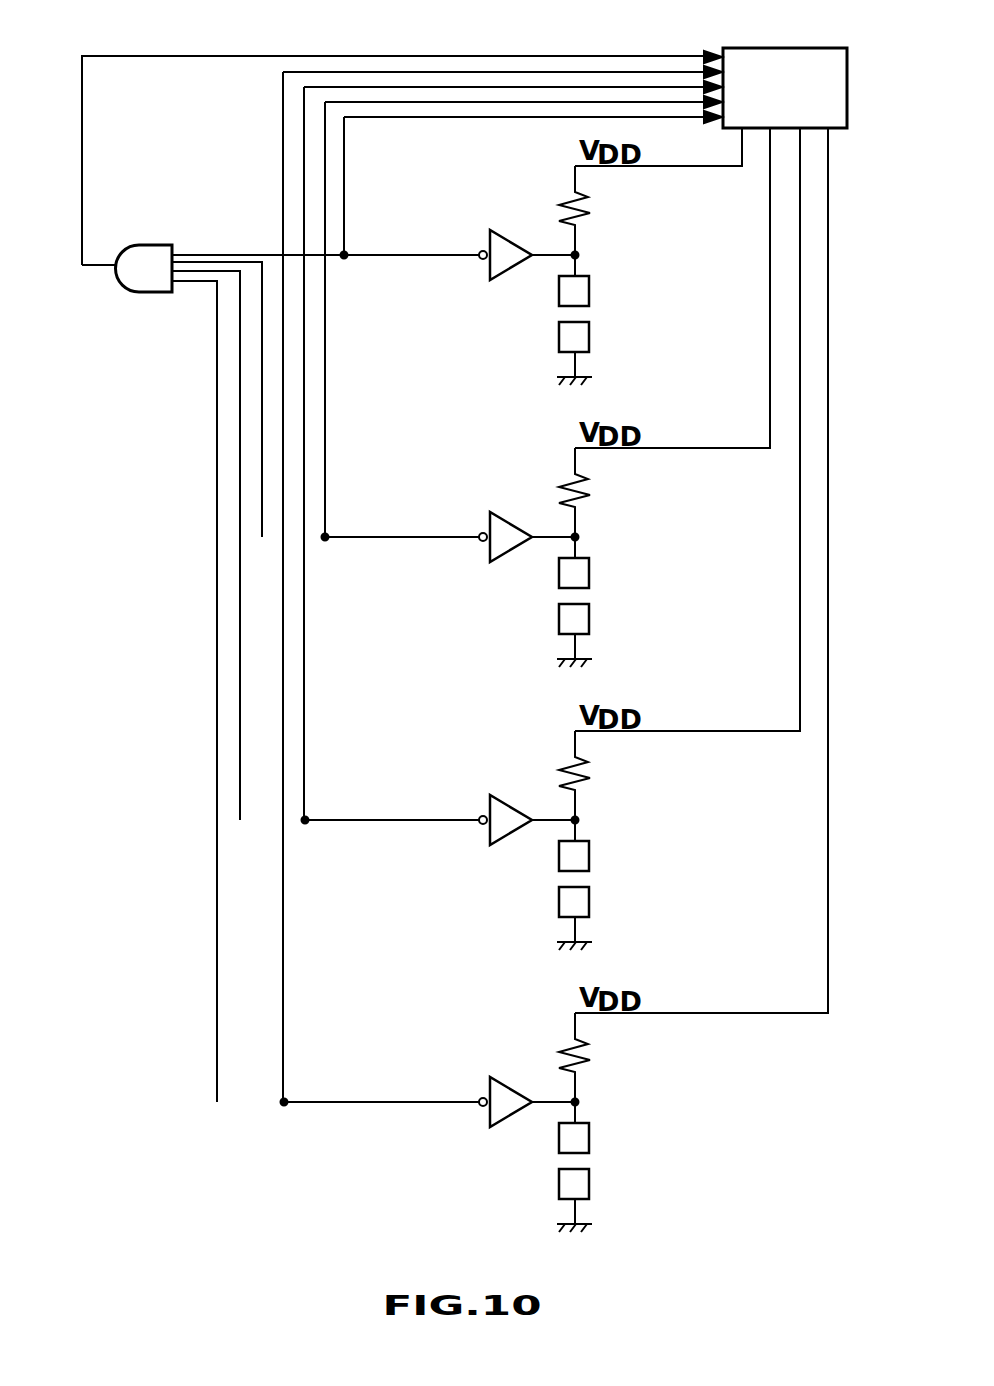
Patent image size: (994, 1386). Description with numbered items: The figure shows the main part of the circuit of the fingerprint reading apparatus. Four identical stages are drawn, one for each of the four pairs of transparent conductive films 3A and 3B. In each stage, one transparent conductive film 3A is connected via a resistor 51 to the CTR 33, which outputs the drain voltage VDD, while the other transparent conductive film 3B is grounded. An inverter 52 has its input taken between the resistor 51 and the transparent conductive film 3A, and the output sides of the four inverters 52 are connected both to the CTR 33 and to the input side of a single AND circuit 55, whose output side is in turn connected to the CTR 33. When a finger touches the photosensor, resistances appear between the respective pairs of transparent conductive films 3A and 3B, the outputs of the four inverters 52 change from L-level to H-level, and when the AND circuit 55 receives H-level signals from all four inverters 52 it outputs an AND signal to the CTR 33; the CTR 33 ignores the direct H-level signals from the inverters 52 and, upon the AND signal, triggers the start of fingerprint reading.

The CTR 33 is at (821, 52).
The AND circuit 55 is at (149, 244).
The inverter 52 is at (516, 236).
The resistor 51 is at (592, 208).
The transparent conductive film 3A is at (590, 290).
The transparent conductive film 3B is at (590, 342).